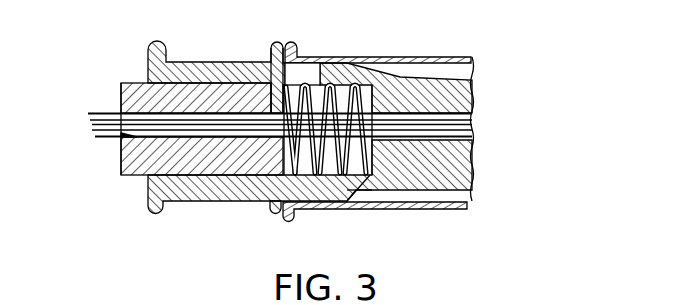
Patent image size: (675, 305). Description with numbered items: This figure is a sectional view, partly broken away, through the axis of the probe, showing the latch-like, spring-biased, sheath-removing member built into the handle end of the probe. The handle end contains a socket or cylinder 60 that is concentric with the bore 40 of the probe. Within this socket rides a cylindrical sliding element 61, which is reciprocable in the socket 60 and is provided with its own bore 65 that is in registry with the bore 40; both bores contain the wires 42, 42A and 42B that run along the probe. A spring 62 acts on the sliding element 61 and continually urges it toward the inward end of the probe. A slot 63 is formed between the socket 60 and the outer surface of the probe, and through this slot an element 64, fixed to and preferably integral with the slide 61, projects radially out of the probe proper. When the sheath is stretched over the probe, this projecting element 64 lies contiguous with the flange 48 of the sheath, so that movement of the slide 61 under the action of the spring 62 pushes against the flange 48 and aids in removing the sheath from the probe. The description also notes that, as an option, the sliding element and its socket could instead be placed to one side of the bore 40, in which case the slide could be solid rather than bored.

The bore 40 is at (473, 142).
The wire 42 is at (95, 112).
The wire 42A is at (95, 124).
The wire 42B is at (114, 136).
The flange 48 is at (291, 43).
The socket 60 is at (123, 83).
The sliding element 61 is at (120, 96).
The spring 62 is at (367, 173).
The slot 63 is at (307, 72).
The element 64 is at (277, 42).
The bore 65 is at (118, 137).